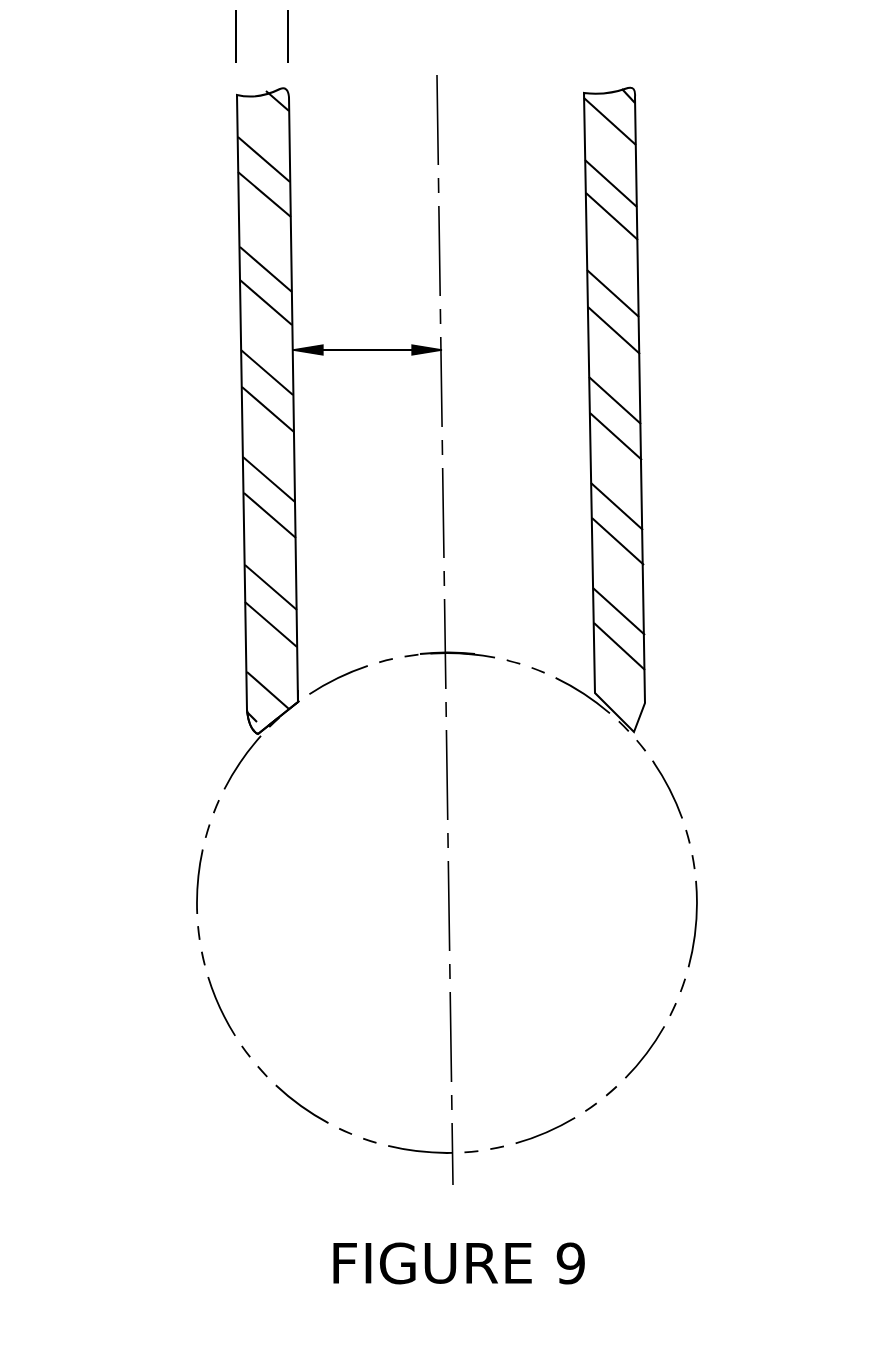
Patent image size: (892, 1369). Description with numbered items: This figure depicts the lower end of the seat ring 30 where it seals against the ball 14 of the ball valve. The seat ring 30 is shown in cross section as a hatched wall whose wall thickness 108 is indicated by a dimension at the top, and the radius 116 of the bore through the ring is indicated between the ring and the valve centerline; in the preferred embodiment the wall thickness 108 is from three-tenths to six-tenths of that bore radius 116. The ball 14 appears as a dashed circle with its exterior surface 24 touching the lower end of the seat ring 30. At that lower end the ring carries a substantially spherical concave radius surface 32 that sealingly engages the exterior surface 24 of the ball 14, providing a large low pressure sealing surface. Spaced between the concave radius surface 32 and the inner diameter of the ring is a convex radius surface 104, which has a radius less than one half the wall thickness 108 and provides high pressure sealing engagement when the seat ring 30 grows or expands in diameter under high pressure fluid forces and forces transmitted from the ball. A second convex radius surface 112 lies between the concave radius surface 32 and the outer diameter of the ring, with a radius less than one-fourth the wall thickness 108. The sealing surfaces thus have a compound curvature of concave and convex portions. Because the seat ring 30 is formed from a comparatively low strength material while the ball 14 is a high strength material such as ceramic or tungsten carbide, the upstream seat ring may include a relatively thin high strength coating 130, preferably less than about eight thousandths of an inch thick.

The ball 14 is at (563, 902).
The exterior surface of the ball 24 is at (476, 601).
The seat ring 30 is at (191, 411).
The concave radius surface 32 is at (338, 771).
The convex radius surface 104 is at (366, 725).
The wall thickness 108 is at (348, 40).
The second convex radius surface 112 is at (172, 789).
The radius of the bore 116 is at (367, 329).
The high strength coating 130 is at (157, 754).